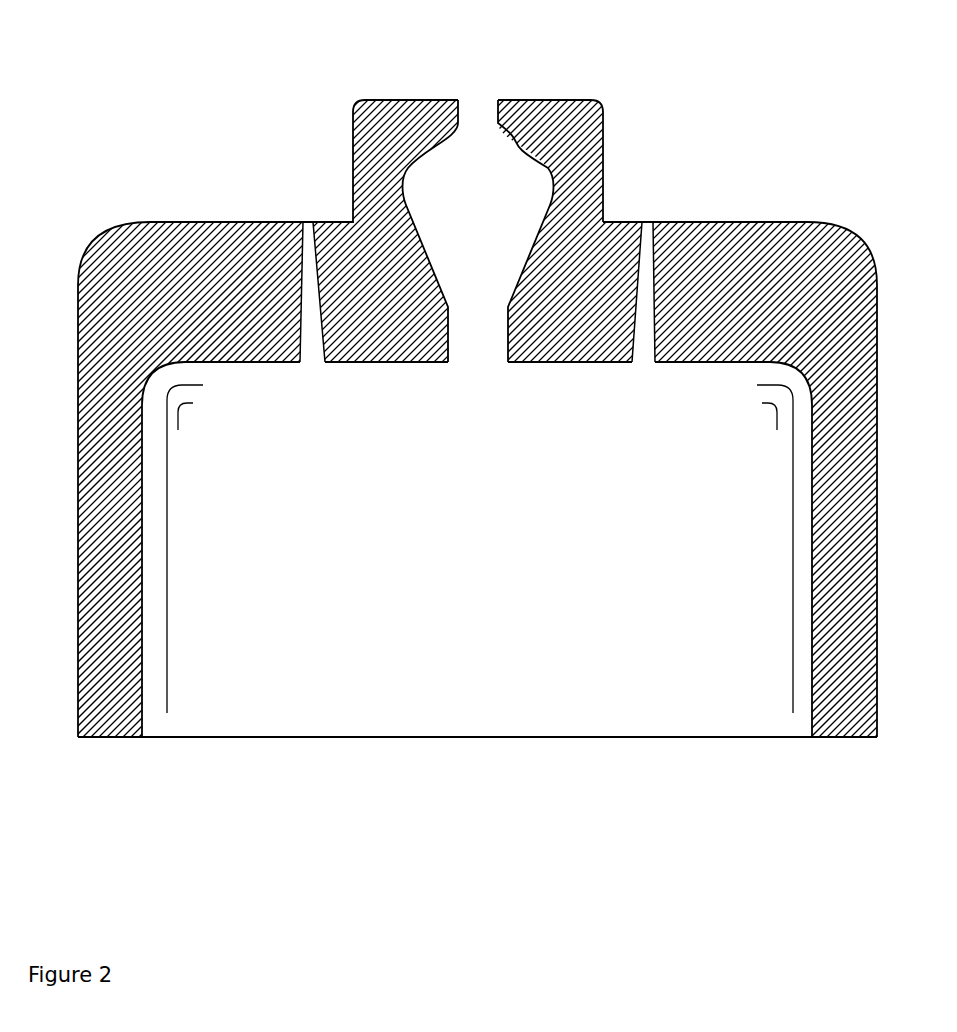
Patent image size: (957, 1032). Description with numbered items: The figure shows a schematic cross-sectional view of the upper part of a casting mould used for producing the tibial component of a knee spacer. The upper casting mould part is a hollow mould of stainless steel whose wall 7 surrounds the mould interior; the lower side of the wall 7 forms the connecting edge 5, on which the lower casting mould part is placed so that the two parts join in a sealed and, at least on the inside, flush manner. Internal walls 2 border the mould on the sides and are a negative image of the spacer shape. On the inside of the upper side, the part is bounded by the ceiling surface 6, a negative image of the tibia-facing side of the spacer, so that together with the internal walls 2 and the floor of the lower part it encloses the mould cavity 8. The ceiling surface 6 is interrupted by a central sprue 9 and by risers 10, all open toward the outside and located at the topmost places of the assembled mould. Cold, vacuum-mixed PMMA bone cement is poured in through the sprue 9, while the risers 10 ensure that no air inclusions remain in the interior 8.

The internal walls 2 is at (808, 572).
The connecting edge 5 is at (842, 738).
The ceiling surface 6 is at (384, 363).
The wall 7 is at (856, 535).
The mould cavity 8 is at (297, 505).
The sprue 9 is at (475, 218).
The risers 10 is at (307, 318).